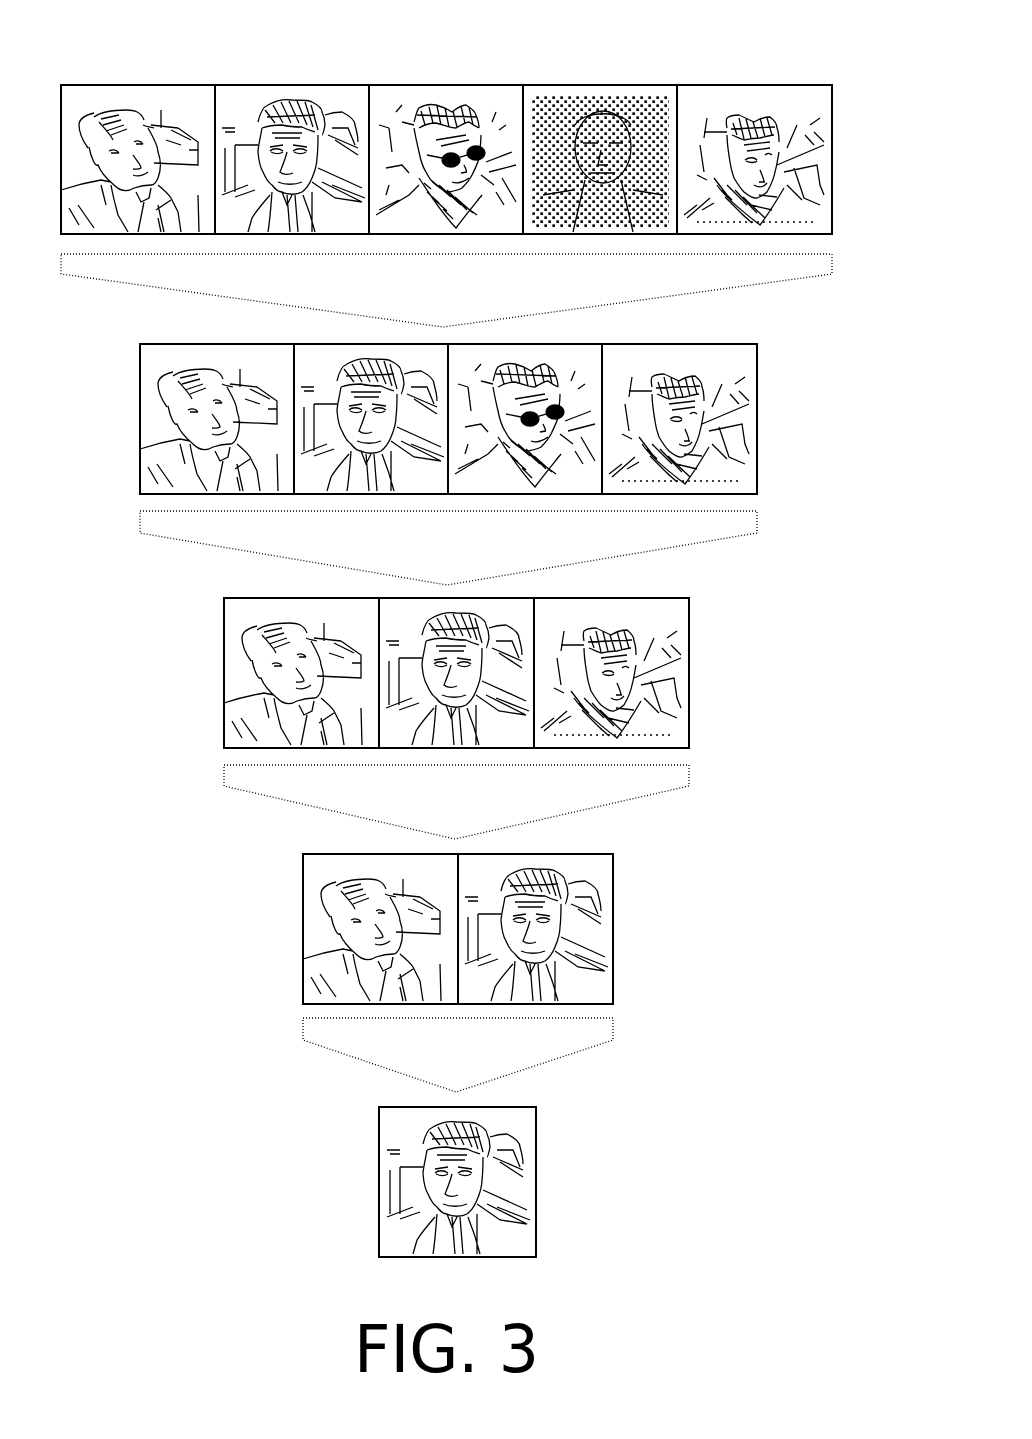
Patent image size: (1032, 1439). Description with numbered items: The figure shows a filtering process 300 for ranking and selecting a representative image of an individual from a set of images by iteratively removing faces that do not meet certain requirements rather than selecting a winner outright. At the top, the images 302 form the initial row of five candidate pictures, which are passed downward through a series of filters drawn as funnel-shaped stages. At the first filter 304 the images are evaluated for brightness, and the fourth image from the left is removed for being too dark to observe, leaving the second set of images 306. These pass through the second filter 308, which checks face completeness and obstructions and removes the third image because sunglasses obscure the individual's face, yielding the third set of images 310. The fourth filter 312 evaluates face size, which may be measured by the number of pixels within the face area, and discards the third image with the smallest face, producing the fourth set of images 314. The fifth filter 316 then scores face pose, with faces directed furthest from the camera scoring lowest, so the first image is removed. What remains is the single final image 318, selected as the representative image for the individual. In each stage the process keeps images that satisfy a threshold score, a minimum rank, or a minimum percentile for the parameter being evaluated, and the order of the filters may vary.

The filtering process 300 is at (845, 69).
The images 302 is at (449, 85).
The first filter 304 is at (465, 301).
The second set of images 306 is at (757, 352).
The second filter 308 is at (466, 557).
The third set of images 310 is at (689, 636).
The fourth filter 312 is at (475, 812).
The fourth set of images 314 is at (613, 893).
The fifth filter 316 is at (475, 1064).
The final image 318 is at (536, 1157).